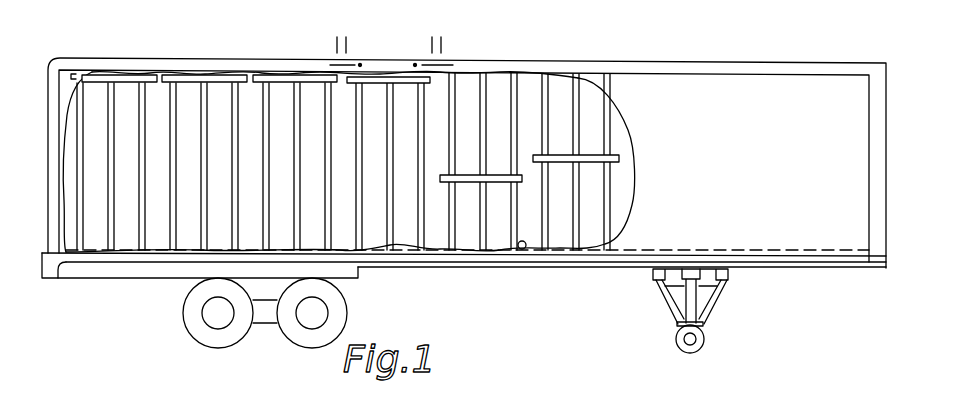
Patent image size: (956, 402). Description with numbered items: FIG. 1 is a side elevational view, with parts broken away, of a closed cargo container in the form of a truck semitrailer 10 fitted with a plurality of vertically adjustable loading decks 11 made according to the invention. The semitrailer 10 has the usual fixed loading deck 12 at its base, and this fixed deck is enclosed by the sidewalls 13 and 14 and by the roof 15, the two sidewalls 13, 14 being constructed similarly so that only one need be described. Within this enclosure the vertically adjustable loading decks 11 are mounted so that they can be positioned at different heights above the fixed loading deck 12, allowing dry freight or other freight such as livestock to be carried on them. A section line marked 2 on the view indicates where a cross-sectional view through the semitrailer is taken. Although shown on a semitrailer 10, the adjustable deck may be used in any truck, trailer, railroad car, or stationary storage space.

The truck semitrailer 10 is at (619, 275).
The vertically adjustable loading decks 11 is at (262, 71).
The fixed loading deck 12 is at (520, 249).
The sidewall 13 is at (560, 88).
The sidewall 14 is at (743, 88).
The roof 15 is at (656, 72).
The section line 2- 2 is at (342, 40).